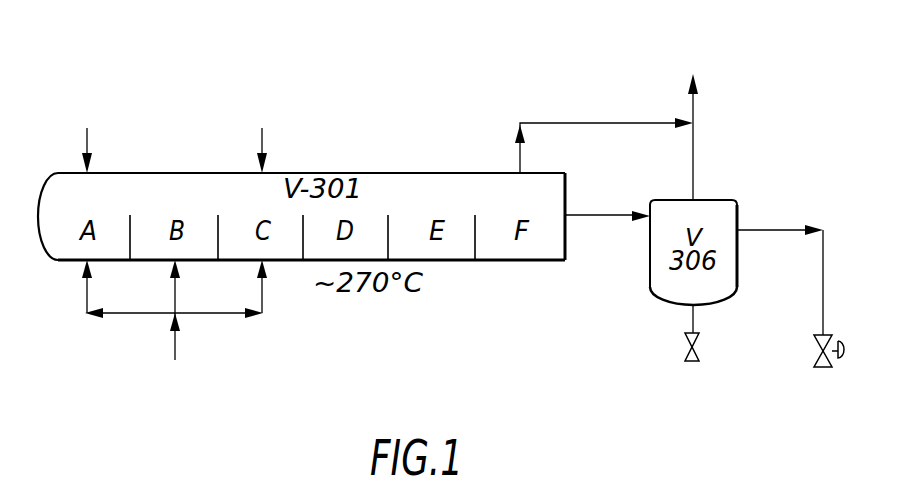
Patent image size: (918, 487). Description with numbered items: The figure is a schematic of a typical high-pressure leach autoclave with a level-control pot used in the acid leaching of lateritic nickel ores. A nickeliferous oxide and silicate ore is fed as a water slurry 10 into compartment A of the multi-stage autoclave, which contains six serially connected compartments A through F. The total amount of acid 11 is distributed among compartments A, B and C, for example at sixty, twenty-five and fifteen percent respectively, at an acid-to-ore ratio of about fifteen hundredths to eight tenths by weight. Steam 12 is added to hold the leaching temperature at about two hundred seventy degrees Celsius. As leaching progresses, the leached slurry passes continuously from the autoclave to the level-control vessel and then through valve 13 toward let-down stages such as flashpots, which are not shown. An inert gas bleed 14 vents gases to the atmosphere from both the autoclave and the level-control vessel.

The water slurry 10 is at (137, 128).
The acid 11 is at (225, 387).
The steam 12 is at (315, 128).
The valve 13 is at (690, 346).
The inert gas bleed 14 is at (767, 72).